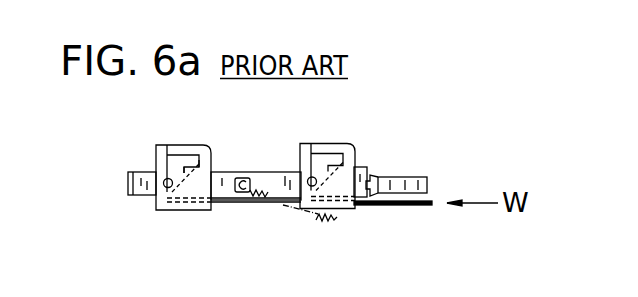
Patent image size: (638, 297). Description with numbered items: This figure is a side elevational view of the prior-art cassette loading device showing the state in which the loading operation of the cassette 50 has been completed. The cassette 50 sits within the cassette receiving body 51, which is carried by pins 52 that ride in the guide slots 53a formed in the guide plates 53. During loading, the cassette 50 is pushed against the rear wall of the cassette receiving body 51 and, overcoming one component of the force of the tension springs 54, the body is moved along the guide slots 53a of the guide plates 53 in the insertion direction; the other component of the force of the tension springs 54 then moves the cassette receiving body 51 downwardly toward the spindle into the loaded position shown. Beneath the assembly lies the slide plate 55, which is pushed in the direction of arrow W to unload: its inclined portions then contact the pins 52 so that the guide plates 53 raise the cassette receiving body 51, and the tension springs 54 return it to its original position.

The cassette 50 is at (404, 177).
The cassette receiving body 51 is at (239, 172).
The pins 52 is at (164, 181).
The guide plates 53 is at (201, 146).
The guide slots 53a is at (173, 153).
The tension springs 54 is at (316, 215).
The slide plate 55 is at (404, 205).